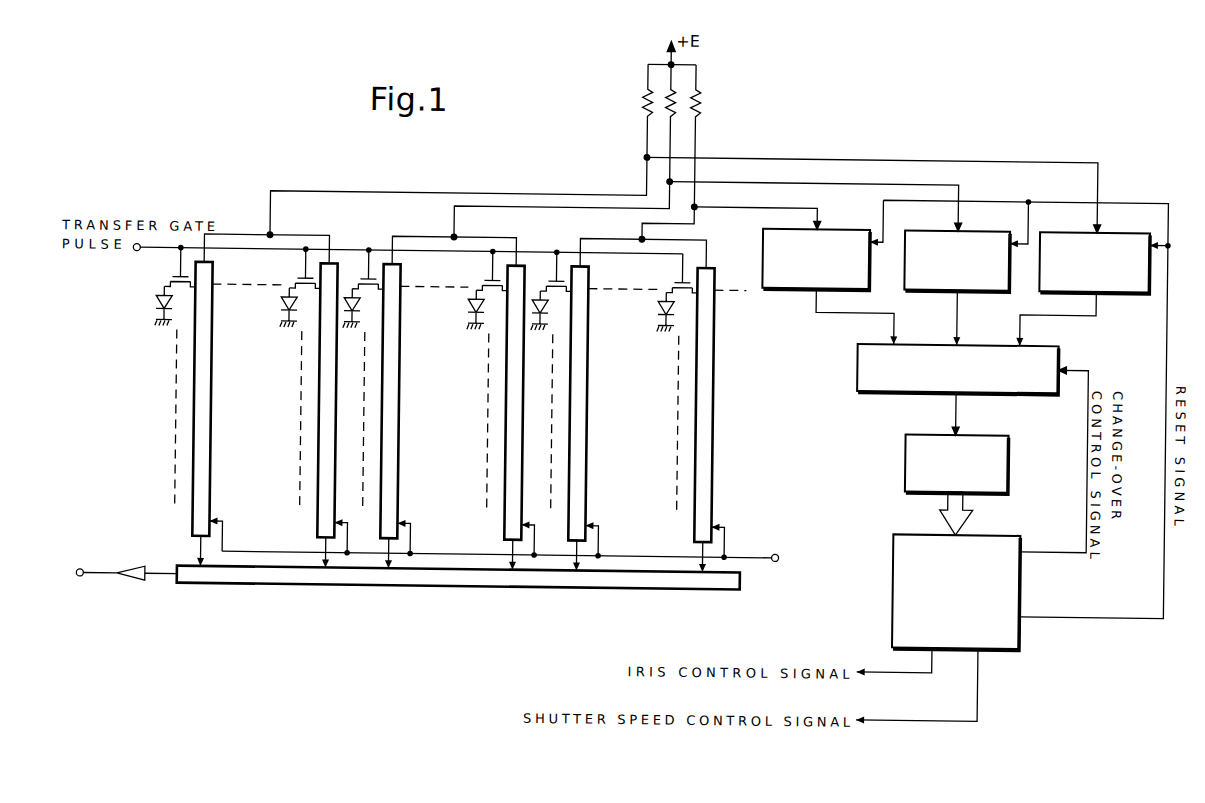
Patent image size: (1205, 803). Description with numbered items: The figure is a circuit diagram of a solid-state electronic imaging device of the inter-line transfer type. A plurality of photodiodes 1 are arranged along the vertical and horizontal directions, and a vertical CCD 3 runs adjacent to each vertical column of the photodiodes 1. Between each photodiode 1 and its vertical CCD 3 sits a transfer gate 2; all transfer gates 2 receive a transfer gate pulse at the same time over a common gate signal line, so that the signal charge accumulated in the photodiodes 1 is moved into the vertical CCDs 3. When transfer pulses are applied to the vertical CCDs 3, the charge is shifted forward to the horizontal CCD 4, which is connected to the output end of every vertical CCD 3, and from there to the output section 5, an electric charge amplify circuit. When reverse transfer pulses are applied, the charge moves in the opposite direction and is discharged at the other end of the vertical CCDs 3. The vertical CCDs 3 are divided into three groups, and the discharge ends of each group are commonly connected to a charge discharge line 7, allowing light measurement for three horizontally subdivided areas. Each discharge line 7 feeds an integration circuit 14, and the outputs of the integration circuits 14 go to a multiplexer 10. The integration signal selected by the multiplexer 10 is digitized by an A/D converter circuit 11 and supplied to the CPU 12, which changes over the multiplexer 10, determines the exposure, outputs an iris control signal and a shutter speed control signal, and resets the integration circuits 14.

The photodiode 1 is at (155, 307).
The transfer gate 2 is at (175, 282).
The vertical CCD 3 is at (211, 412).
The horizontal CCD 4 is at (456, 589).
The output section 5 is at (142, 587).
The charge discharge line 7 is at (268, 208).
The multiplexer 10 is at (857, 370).
The A/D converter circuit 11 is at (906, 455).
The CPU 12 is at (1025, 642).
The integration circuit 14 is at (790, 288).